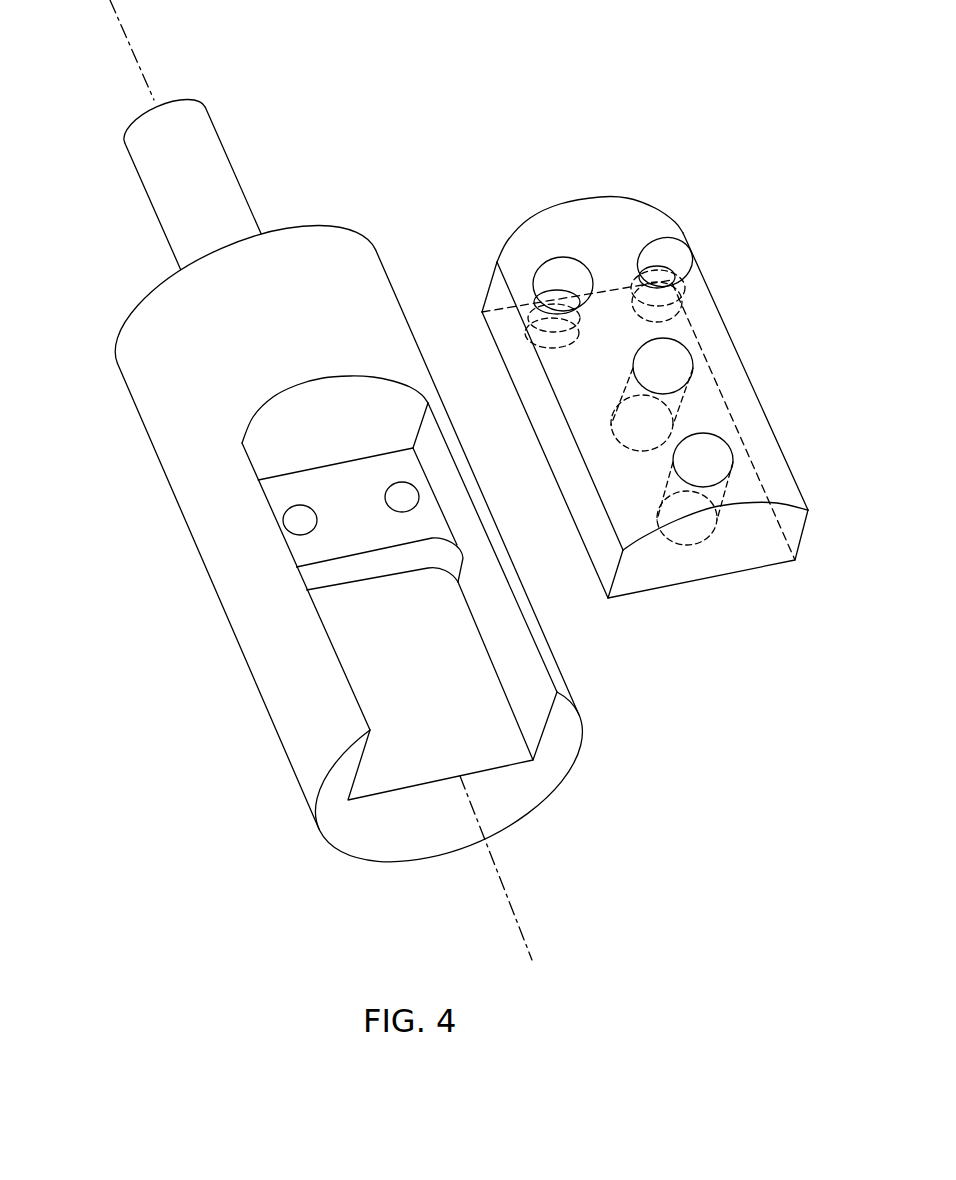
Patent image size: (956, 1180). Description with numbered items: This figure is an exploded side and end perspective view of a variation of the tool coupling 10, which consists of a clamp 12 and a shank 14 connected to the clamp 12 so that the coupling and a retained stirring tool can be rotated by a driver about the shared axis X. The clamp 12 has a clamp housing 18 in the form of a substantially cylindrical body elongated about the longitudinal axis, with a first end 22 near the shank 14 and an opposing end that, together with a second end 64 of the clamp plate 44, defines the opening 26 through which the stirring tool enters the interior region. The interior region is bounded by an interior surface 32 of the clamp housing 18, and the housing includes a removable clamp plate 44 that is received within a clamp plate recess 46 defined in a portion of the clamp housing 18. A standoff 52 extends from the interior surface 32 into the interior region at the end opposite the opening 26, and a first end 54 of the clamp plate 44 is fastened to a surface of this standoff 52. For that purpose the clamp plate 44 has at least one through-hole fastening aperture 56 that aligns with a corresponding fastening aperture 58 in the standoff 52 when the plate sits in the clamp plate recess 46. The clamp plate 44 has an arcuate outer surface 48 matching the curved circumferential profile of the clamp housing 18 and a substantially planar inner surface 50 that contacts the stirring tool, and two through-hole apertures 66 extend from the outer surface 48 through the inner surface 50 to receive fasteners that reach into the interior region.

The tool coupling 10 is at (528, 88).
The clamp 12 is at (133, 408).
The shank 14 is at (232, 163).
The clamp housing 18 is at (218, 575).
The first end 22 is at (344, 211).
The opening 26 is at (517, 767).
The interior surface 32 is at (485, 710).
The clamp plate 44 is at (717, 293).
The clamp plate recess 46 is at (360, 655).
The outer surface 48 is at (733, 387).
The inner surface 50 is at (577, 540).
The standoff 52 is at (313, 482).
The first end 54 is at (612, 182).
The fastening aperture 56 is at (563, 257).
The fastening aperture 58 is at (313, 515).
The second end 64 is at (708, 614).
The through-hole aperture 66 is at (695, 337).